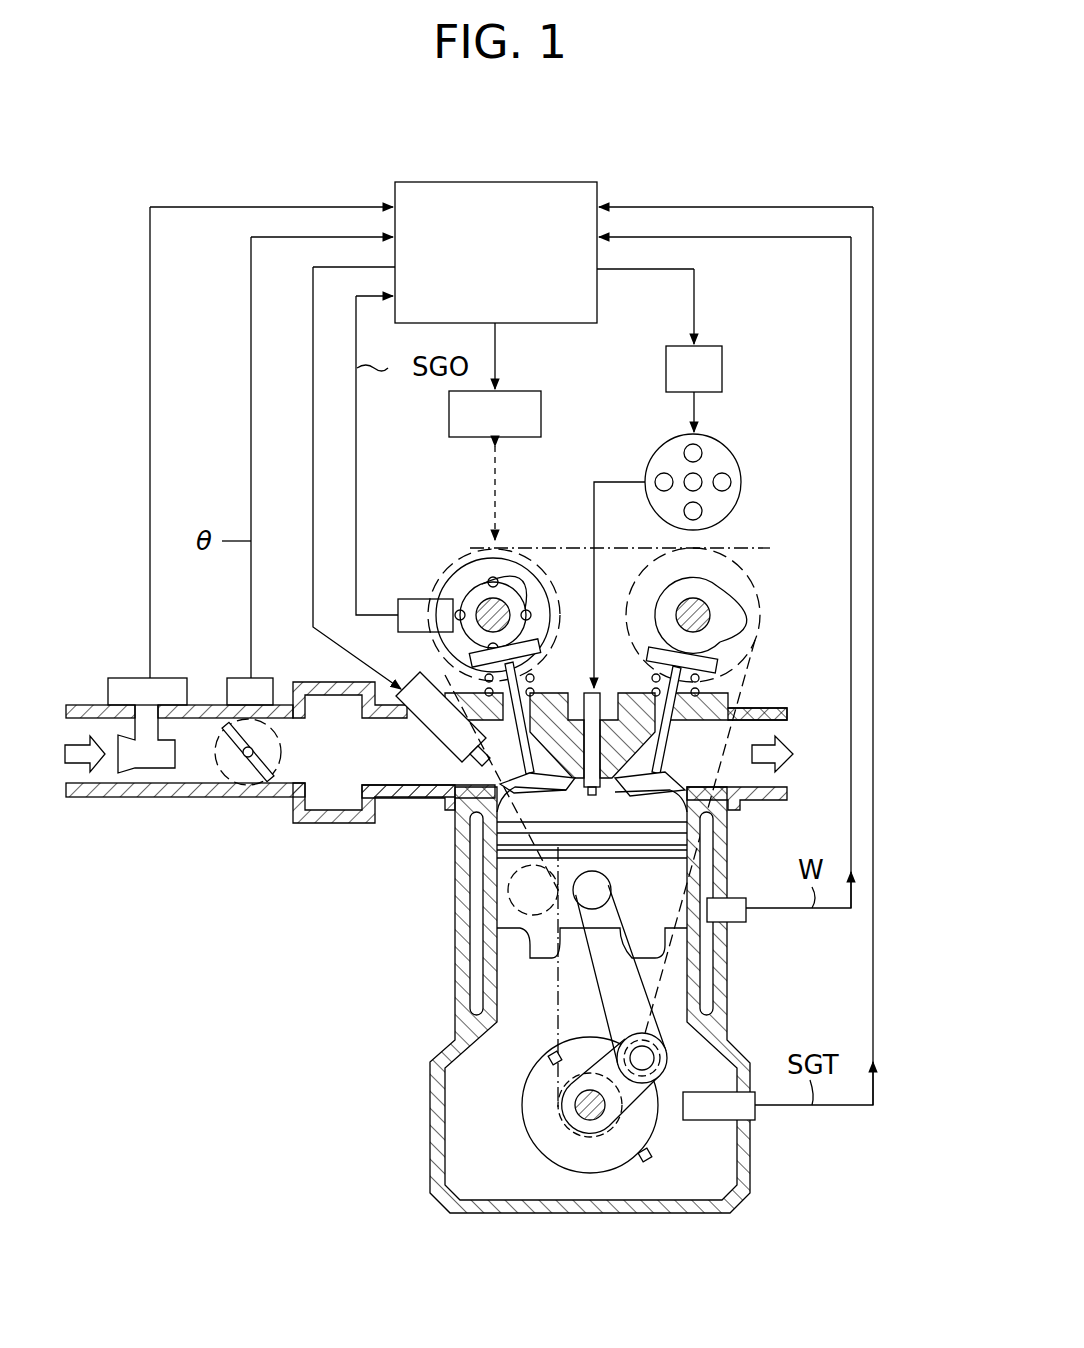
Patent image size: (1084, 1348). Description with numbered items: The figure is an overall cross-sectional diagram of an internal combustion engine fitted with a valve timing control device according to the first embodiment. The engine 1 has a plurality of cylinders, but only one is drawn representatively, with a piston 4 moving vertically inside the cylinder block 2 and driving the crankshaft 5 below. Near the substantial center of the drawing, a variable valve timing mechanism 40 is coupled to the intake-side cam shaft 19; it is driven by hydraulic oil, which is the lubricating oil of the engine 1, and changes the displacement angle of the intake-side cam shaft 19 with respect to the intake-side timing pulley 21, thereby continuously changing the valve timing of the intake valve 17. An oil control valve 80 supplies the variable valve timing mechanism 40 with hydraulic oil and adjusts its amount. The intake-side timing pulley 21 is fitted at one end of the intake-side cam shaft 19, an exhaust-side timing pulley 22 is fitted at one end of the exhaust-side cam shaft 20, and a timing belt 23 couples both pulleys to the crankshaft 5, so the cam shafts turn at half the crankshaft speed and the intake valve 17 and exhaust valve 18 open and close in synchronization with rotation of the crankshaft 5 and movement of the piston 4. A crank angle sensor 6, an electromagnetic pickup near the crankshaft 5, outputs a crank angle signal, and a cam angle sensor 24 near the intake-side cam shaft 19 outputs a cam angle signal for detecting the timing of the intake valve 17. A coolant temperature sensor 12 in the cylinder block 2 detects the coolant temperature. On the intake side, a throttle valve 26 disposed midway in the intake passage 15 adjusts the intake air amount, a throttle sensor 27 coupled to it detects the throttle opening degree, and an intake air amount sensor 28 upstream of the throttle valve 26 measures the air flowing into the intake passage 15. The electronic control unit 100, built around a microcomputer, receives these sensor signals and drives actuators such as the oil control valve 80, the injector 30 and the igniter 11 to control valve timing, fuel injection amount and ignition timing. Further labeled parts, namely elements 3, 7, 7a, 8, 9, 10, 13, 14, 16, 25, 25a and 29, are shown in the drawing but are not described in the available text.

The engine 1 is at (618, 737).
The cylinder block 2 is at (728, 978).
The cylinder head 3 is at (560, 693).
The piston 4 is at (510, 933).
The crankshaft 5 is at (590, 1113).
The crank angle sensor 6 is at (755, 1108).
The signal rotor 7 is at (612, 1173).
The protrusions of signal rotor 7a is at (533, 1055).
The combustion chamber 8 is at (530, 827).
The spark plug 9 is at (600, 695).
The distributor 10 is at (741, 482).
The igniter 11 is at (722, 370).
The coolant temperature sensor 12 is at (747, 917).
The intake port 13 is at (455, 790).
The exhaust port 14 is at (662, 782).
The intake passage 15 is at (162, 797).
The exhaust passage 16 is at (757, 803).
The intake valve 17 is at (510, 830).
The exhaust valve 18 is at (692, 812).
The intake-side cam shaft 19 is at (477, 602).
The exhaust-side cam shaft 20 is at (693, 612).
The intake-side timing pulley 21 is at (532, 538).
The exhaust-side timing pulley 22 is at (647, 565).
The timing belt 23 is at (539, 560).
The cam angle sensor 24 is at (398, 598).
The rotor of valve timing mechanism 25 is at (480, 600).
The protrusion of rotor 25a is at (492, 578).
The throttle valve 26 is at (260, 770).
The throttle sensor 27 is at (275, 678).
The intake air amount sensor 28 is at (177, 678).
The surge tank 29 is at (330, 810).
The injector 30 is at (417, 688).
The variable valve timing mechanism 40 is at (543, 608).
The oil control valve 80 is at (542, 412).
The electronic control unit 100 is at (509, 182).